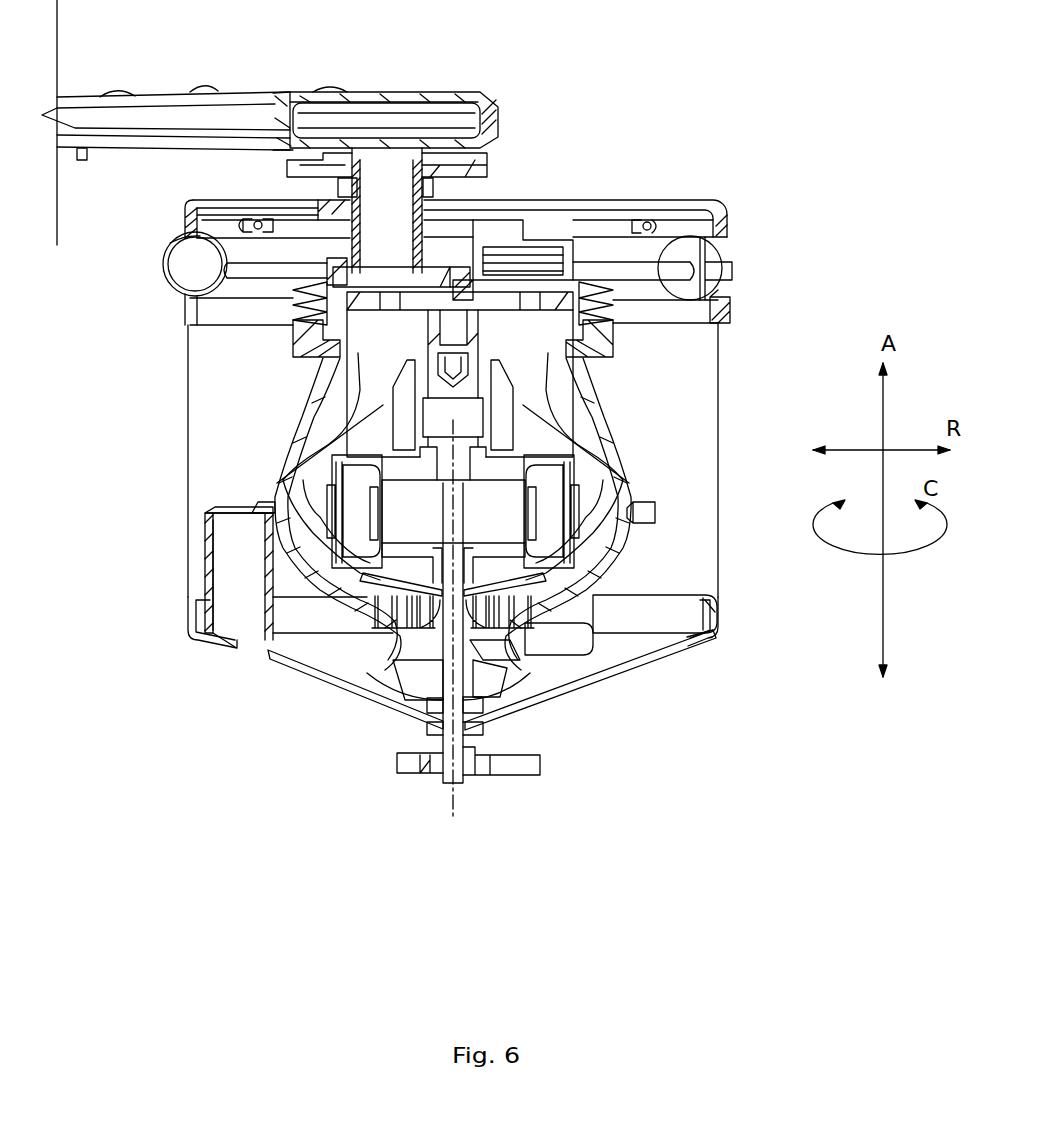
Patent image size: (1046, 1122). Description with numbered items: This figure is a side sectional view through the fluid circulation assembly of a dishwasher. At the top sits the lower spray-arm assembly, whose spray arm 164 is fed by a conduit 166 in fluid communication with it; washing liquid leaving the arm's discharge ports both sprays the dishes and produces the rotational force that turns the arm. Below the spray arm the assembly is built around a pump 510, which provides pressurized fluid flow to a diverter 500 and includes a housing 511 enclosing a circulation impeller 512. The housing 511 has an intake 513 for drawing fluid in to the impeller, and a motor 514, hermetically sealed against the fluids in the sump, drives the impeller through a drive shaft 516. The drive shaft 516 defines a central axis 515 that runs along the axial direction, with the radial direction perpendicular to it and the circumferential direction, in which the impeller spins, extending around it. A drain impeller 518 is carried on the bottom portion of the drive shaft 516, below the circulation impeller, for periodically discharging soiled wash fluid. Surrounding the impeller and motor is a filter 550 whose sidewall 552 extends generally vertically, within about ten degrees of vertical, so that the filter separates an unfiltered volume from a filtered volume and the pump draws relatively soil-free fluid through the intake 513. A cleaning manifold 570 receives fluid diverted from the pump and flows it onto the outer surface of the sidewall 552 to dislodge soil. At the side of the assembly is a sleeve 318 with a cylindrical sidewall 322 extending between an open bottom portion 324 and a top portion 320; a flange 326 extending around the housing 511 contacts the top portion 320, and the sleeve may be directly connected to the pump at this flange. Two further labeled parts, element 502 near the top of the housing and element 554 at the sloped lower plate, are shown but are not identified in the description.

The spray arm 164 is at (150, 105).
The conduit 166 is at (427, 187).
The cleaning manifold 570 is at (170, 243).
The filter 550 is at (722, 365).
The diverter 500 is at (300, 340).
The electronics stack 502 is at (467, 300).
The sidewall 552 is at (187, 422).
The housing 511 is at (597, 423).
The pump 510 is at (683, 441).
The flange 326 is at (268, 505).
The top portion 320 is at (207, 513).
The sleeve 318 is at (185, 540).
The sidewall 322 is at (205, 567).
The motor 514 is at (510, 535).
The open bottom portion 324 is at (268, 655).
The circulation impeller 512 is at (530, 587).
The bottom plate 554 is at (297, 677).
The drive shaft 516 is at (443, 733).
The intake 513 is at (483, 660).
The central axis 515 is at (452, 797).
The drain impeller 518 is at (523, 777).